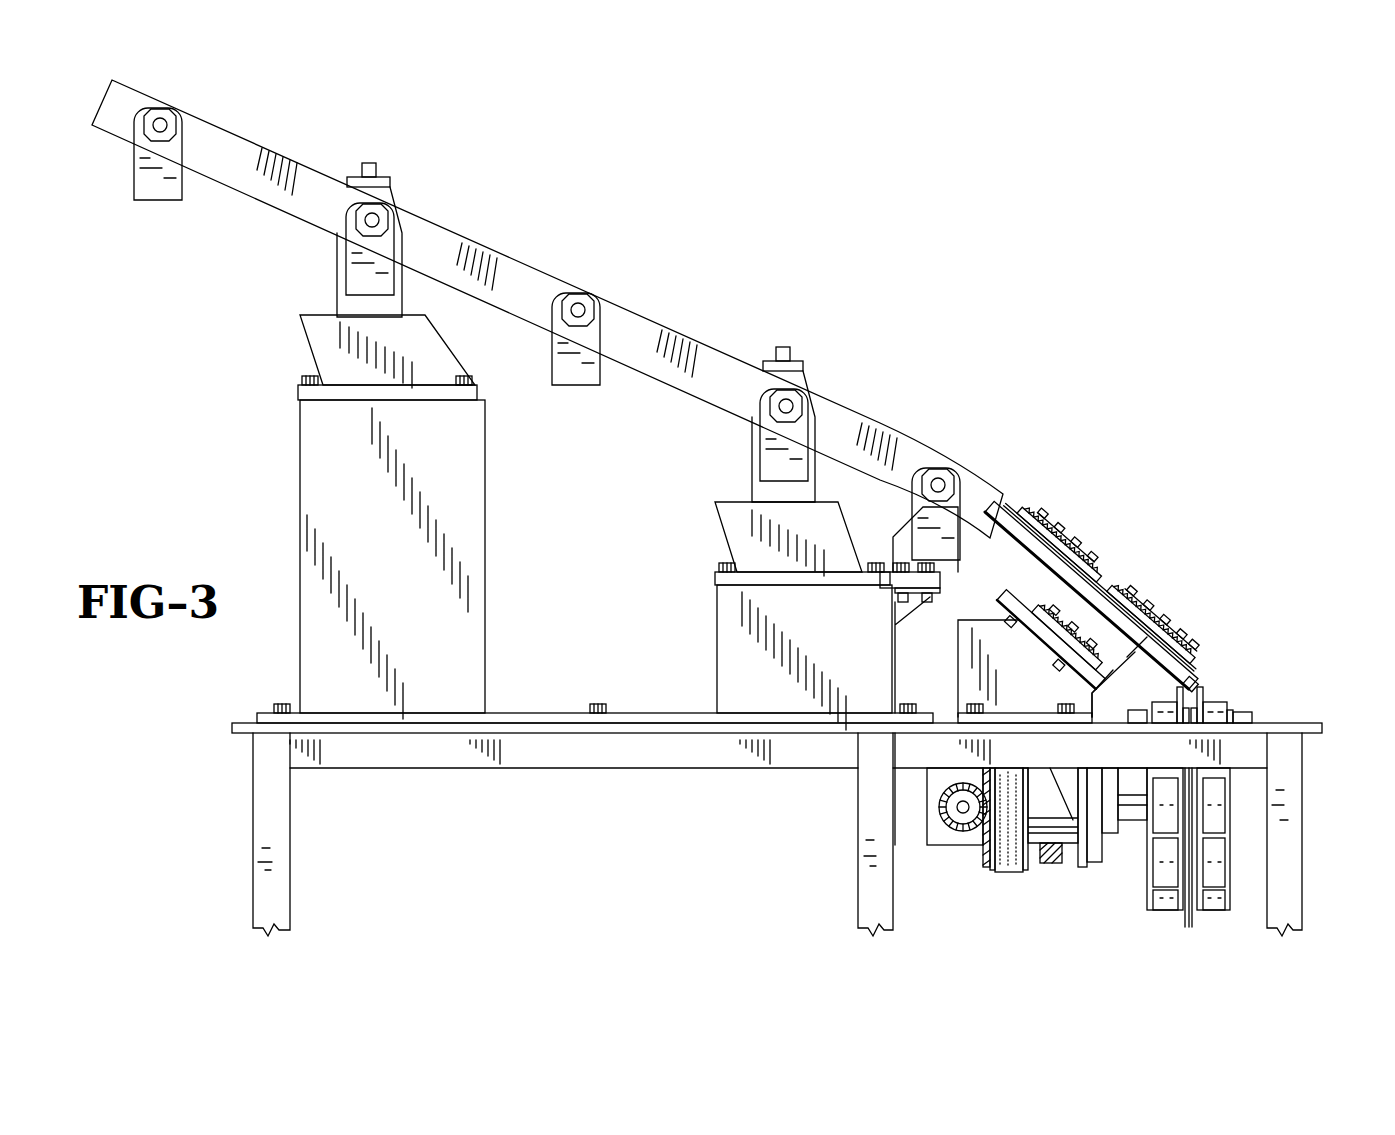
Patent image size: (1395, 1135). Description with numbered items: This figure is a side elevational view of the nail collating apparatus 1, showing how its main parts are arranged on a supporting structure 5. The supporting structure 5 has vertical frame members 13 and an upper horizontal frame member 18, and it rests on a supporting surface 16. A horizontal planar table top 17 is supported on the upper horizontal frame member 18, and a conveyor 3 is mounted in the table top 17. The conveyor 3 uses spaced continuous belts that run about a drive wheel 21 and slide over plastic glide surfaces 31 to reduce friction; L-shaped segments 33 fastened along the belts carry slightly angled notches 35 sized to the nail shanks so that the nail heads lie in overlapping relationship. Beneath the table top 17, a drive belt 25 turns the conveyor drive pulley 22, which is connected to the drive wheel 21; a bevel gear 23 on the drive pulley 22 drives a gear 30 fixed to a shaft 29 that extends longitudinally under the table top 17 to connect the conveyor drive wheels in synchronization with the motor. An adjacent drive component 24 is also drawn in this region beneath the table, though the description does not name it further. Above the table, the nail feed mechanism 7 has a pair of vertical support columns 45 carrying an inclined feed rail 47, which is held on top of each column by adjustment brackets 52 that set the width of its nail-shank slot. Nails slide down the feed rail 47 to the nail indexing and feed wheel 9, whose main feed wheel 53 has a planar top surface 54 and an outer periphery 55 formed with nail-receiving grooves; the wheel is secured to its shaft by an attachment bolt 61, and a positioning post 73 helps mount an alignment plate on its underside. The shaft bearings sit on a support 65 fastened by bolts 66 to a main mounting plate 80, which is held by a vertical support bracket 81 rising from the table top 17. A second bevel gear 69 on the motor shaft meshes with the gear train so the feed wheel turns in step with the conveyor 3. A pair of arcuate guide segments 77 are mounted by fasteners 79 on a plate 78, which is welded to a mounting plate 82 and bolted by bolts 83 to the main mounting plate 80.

The apparatus 1 is at (946, 312).
The conveyor 3 is at (1242, 893).
The supporting structure 5 is at (1310, 816).
The nail feed mechanism 7 is at (522, 244).
The nail indexing and feed wheel 9 is at (1064, 500).
The vertical frame members 13 is at (262, 884).
The supporting surface 16 is at (1307, 723).
The table top 17 is at (544, 712).
The upper horizontal frame member 18 is at (668, 770).
The drive wheel 21 is at (1148, 888).
The conveyor drive pulley 22 is at (1029, 857).
The bevel gear 23 is at (985, 857).
The drive shaft 24 is at (1133, 821).
The drive belt 25 is at (1012, 870).
The shaft 29 is at (962, 812).
The gear 30 is at (947, 804).
The glide surfaces 31 is at (1243, 710).
The L-shaped segments 33 is at (1222, 793).
The notches 35 is at (1234, 868).
The vertical support columns 45 is at (318, 478).
The inclined feed rail 47 is at (637, 323).
The adjustment brackets 52 is at (158, 198).
The main feed wheel 53 is at (1200, 647).
The top surface 54 is at (1162, 640).
The outer periphery 55 is at (1023, 495).
The attachment bolt 61 is at (1120, 581).
The support 65 is at (1010, 597).
The bolts 66 is at (1027, 592).
The second bevel gear 69 is at (1063, 864).
The positioning post 73 is at (1075, 532).
The arcuate guide segments 77 is at (1196, 683).
The plate 78 is at (1130, 652).
The fasteners 79 is at (1150, 620).
The main mounting plate 80 is at (1050, 650).
The vertical support bracket 81 is at (968, 647).
The mounting plate 82 is at (1080, 680).
The bolts 83 is at (1086, 590).